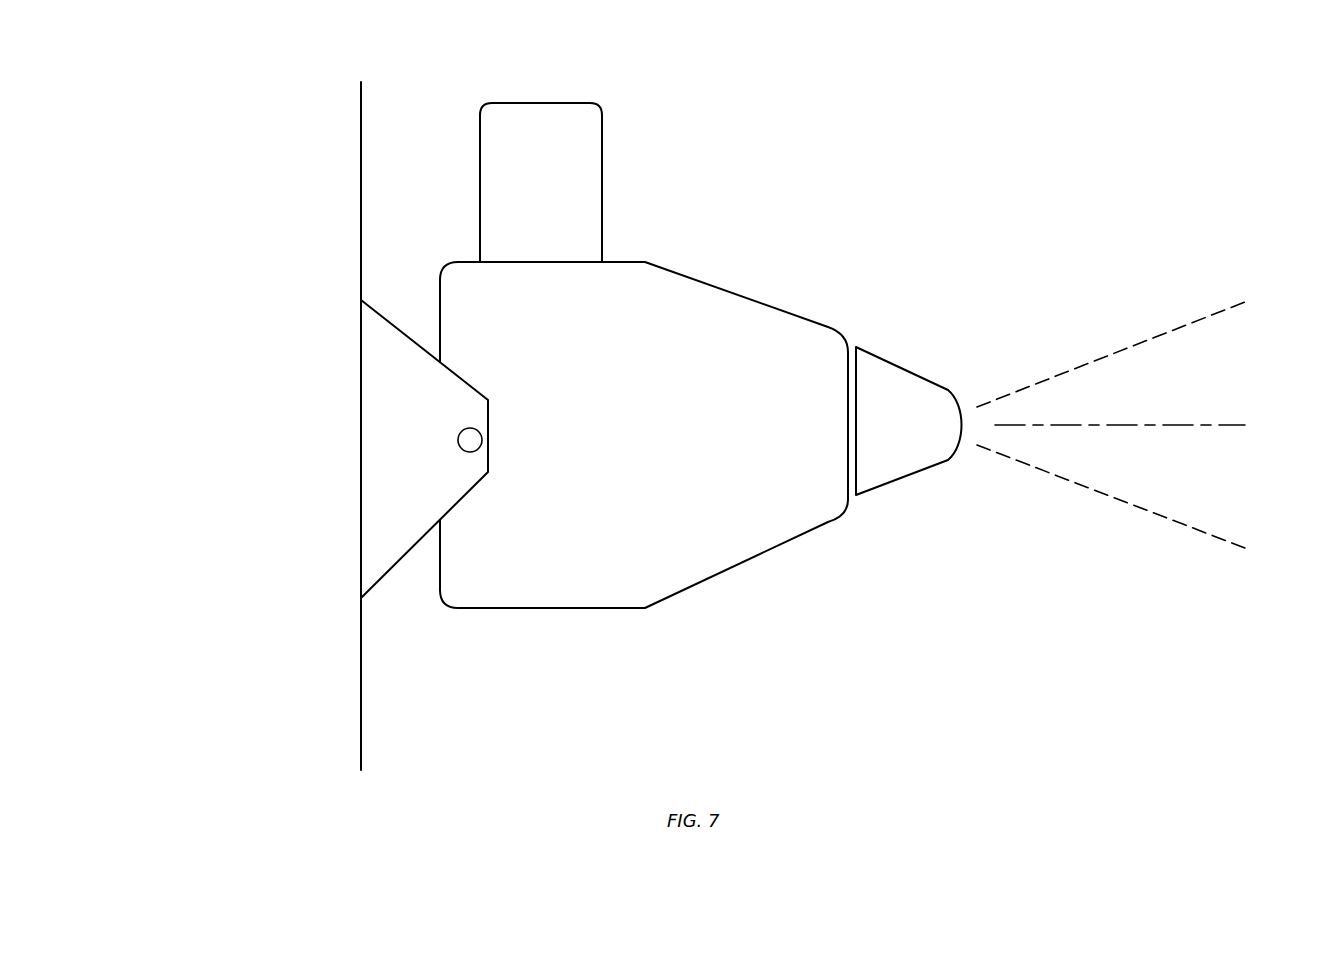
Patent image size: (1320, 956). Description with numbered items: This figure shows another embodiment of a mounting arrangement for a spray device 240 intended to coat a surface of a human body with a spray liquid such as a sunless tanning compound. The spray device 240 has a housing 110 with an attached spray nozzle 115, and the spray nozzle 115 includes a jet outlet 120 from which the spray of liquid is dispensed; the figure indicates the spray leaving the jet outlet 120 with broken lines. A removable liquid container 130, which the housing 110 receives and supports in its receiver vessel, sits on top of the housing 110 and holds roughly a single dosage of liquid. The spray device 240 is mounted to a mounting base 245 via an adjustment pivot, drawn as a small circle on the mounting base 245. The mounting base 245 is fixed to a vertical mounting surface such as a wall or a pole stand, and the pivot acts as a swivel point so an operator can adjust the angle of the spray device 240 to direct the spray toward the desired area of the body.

The spray device 240 is at (903, 168).
The removable liquid container 130 is at (572, 160).
The housing 110 is at (723, 517).
The mounting base 245 is at (388, 488).
The spray nozzle 115 is at (862, 374).
The jet outlet 120 is at (965, 425).